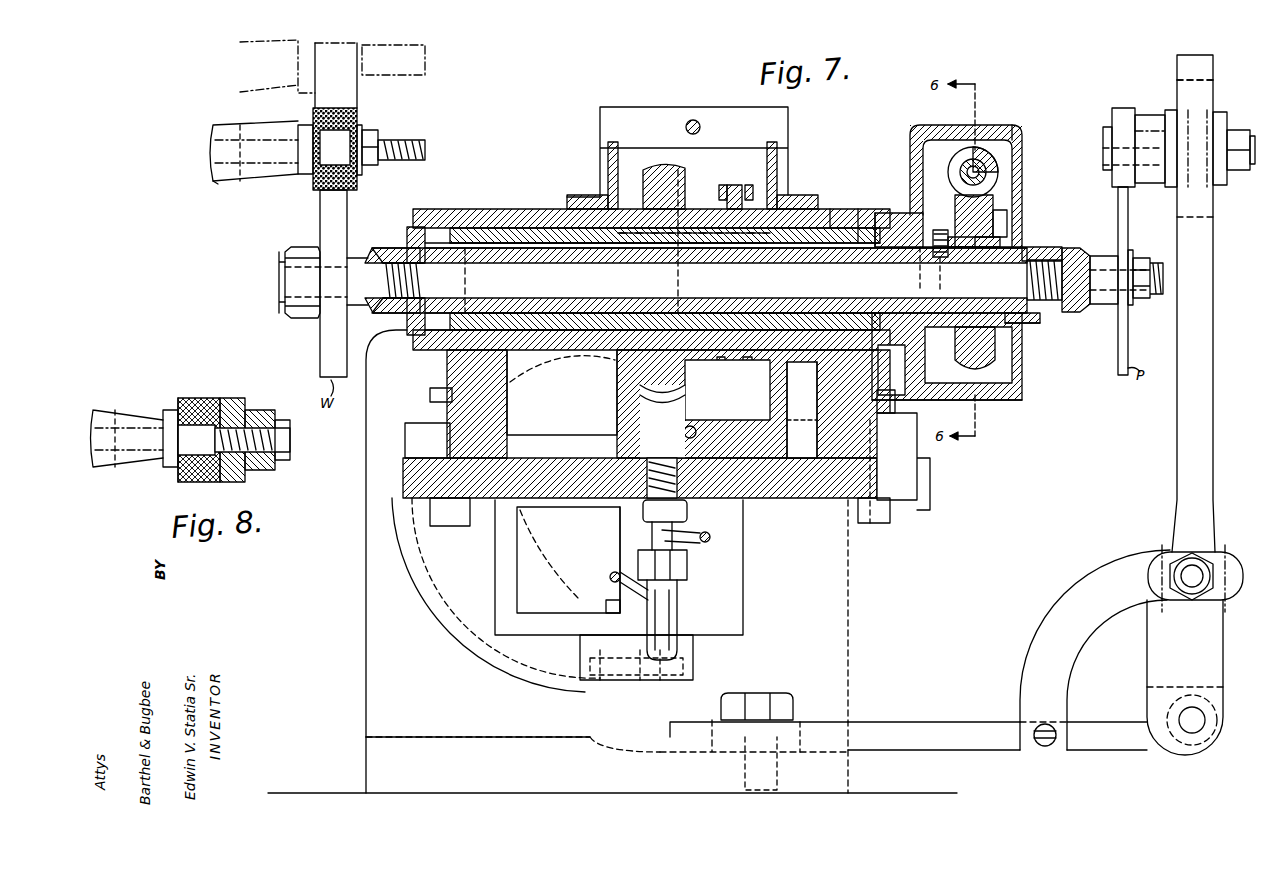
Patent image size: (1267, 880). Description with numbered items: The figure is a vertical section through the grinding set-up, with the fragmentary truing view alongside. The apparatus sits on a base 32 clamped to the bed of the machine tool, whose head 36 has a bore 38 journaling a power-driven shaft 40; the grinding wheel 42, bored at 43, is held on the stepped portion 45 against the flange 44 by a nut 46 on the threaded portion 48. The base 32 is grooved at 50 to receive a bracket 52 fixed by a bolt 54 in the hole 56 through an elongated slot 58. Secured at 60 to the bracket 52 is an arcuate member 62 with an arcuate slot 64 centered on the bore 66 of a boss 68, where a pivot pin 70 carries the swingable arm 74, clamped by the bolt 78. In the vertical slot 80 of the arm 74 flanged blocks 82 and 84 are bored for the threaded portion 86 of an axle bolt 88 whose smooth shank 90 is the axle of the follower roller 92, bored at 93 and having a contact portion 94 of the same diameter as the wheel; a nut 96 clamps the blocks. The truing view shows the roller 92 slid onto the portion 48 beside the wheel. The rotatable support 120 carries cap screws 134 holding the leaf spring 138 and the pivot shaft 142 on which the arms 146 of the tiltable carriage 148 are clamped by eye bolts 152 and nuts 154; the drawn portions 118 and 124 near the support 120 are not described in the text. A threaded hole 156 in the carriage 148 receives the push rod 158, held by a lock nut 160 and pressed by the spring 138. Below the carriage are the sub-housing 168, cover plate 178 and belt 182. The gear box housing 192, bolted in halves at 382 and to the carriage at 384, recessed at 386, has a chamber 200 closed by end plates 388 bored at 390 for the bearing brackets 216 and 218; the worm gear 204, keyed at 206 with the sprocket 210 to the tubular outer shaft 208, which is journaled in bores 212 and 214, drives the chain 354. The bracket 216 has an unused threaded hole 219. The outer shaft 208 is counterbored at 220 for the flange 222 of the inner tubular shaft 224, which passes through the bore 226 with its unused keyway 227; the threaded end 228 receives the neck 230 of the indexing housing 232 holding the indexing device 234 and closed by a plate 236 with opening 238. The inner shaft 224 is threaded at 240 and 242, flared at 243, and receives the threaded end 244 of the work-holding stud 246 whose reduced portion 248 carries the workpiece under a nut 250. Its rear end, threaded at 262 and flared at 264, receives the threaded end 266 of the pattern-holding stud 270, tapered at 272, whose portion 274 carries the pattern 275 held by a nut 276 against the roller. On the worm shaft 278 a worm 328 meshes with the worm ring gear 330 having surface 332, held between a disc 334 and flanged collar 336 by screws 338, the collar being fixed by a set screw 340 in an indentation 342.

In FIG. 7, the base 32 is at (366, 760).
In FIG. 7, the head 36 is at (234, 178).
In FIG. 8, the head 36 is at (123, 410).
In FIG. 7, the bore 38 is at (240, 124).
In FIG. 8, the bore 38 is at (115, 468).
In FIG. 7, the rotary power-driven shaft 40 is at (214, 150).
In FIG. 8, the rotary power-driven shaft 40 is at (110, 395).
In FIG. 7, the grinding wheel 42 is at (357, 112).
In FIG. 8, the grinding wheel 42 is at (200, 398).
In FIG. 7, the grinding wheel bore 43 is at (310, 112).
In FIG. 8, the grinding wheel bore 43 is at (180, 393).
In FIG. 7, the flange 44 is at (304, 176).
In FIG. 7, the stepped portion 45 is at (320, 150).
In FIG. 8, the stepped portion 45 is at (195, 440).
In FIG. 7, the nut 46 is at (378, 134).
In FIG. 8, the nut 46 is at (284, 460).
In FIG. 7, the reduced diameter threaded portion 48 is at (408, 141).
In FIG. 8, the reduced diameter threaded portion 48 is at (290, 440).
In FIG. 7, the groove 50 is at (645, 737).
In FIG. 7, the bracket 52 is at (943, 724).
In FIG. 7, the bolt 54 is at (760, 693).
In FIG. 7, the hole 56 is at (742, 765).
In FIG. 7, the elongated slot 58 is at (802, 720).
In FIG. 7, the securing means 60 is at (1046, 748).
In FIG. 7, the arcuate member 62 is at (1058, 612).
In FIG. 7, the arcuate slot 64 is at (1160, 566).
In FIG. 7, the bore 66 is at (1192, 734).
In FIG. 7, the boss 68 is at (1163, 750).
In FIG. 7, the pivot pin 70 is at (1180, 718).
In FIG. 7, the swingable arm 74 is at (1177, 455).
In FIG. 7, the clamping bolt 78 is at (1192, 600).
In FIG. 7, the vertical slot 80 is at (1220, 82).
In FIG. 7, the flanged block 82 is at (1224, 118).
In FIG. 7, the flanged block 84 is at (1170, 110).
In FIG. 7, the reduced diameter threaded portion 86 is at (1250, 166).
In FIG. 7, the headed axle bolt 88 is at (1106, 138).
In FIG. 7, the smooth shank 90 is at (1150, 110).
In FIG. 7, the pattern follower roller 92 is at (1145, 148).
In FIG. 8, the pattern follower roller 92 is at (252, 410).
In FIG. 7, the roller bore 93 is at (1112, 166).
In FIG. 8, the roller bore 93 is at (257, 432).
In FIG. 7, the cylindrical contact portion 94 is at (1118, 112).
In FIG. 8, the cylindrical contact portion 94 is at (230, 398).
In FIG. 7, the nut 96 is at (1236, 134).
In FIG. 7, the dial graduation arc 118 is at (602, 530).
In FIG. 7, the rotatable support 120 is at (735, 595).
In FIG. 7, the dial plate 124 is at (535, 568).
In FIG. 7, the cap screws 134 is at (694, 668).
In FIG. 7, the leaf spring 138 is at (693, 650).
In FIG. 7, the pivot shaft 142 is at (926, 490).
In FIG. 7, the bifurcated arms 146 is at (915, 445).
In FIG. 7, the tiltable carriage 148 is at (905, 500).
In FIG. 7, the eye bolts 152 is at (450, 526).
In FIG. 7, the clamping nuts 154 is at (430, 402).
In FIG. 7, the threaded vertical hole 156 is at (668, 478).
In FIG. 7, the push rod 158 is at (682, 563).
In FIG. 7, the lock nut 160 is at (700, 520).
In FIG. 7, the sub-housing 168 is at (517, 590).
In FIG. 7, the cover plate 178 is at (607, 614).
In FIG. 7, the quarter-turn belt 182 is at (710, 540).
In FIG. 7, the gear box housing 192 is at (786, 122).
In FIG. 7, the chamber 200 is at (630, 165).
In FIG. 7, the worm gear 204 is at (680, 170).
In FIG. 7, the key 206 is at (688, 230).
In FIG. 7, the tubular outer shaft 208 is at (540, 250).
In FIG. 7, the sprocket 210 is at (733, 184).
In FIG. 7, the bore 212 is at (841, 210).
In FIG. 7, the bore 214 is at (540, 228).
In FIG. 7, the bearing bracket 216 is at (863, 208).
In FIG. 7, the bearing bracket 218 is at (472, 208).
In FIG. 7, the horizontal threaded hole 219 is at (830, 390).
In FIG. 7, the counterbore 220 is at (416, 210).
In FIG. 7, the annular flange 222 is at (409, 230).
In FIG. 7, the inner tubular shaft 224 is at (492, 244).
In FIG. 7, the bore 226 is at (588, 318).
In FIG. 7, the keyway 227 is at (497, 226).
In FIG. 7, the threaded end 228 is at (884, 226).
In FIG. 7, the threaded neck 230 is at (892, 213).
In FIG. 7, the indexing housing 232 is at (910, 150).
In FIG. 7, the indexing device 234 is at (985, 148).
In FIG. 7, the closure plate 236 is at (1020, 128).
In FIG. 7, the opening 238 is at (1006, 217).
In FIG. 7, the external thread 240 is at (390, 250).
In FIG. 7, the threaded bore 242 is at (404, 336).
In FIG. 7, the flared portion 243 is at (396, 340).
In FIG. 7, the threaded inner end 244 is at (410, 280).
In FIG. 7, the work-holding stud 246 is at (357, 262).
In FIG. 7, the reduced diameter portion 248 is at (285, 292).
In FIG. 7, the nut 250 is at (290, 258).
In FIG. 7, the internal thread 262 is at (1035, 314).
In FIG. 7, the flared portion 264 is at (1062, 323).
In FIG. 7, the threaded inner end 266 is at (1030, 282).
In FIG. 7, the pattern-holding stud 270 is at (1085, 265).
In FIG. 7, the taper 272 is at (1094, 305).
In FIG. 7, the reduced diameter portion 274 is at (1150, 258).
In FIG. 7, the pattern 275 is at (1122, 376).
In FIG. 7, the nut 276 is at (1131, 306).
In FIG. 7, the worm shaft 278 is at (960, 176).
In FIG. 7, the worm 328 is at (952, 162).
In FIG. 7, the worm ring gear 330 is at (965, 410).
In FIG. 7, the internal cylindrical surface 332 is at (1000, 178).
In FIG. 7, the disc 334 is at (1001, 242).
In FIG. 7, the flanged collar 336 is at (955, 340).
In FIG. 7, the screws 338 is at (998, 200).
In FIG. 7, the set screw 340 is at (940, 230).
In FIG. 7, the indentation 342 is at (933, 262).
In FIG. 7, the sprocket chain 354 is at (748, 185).
In FIG. 7, the bolts 382 is at (693, 120).
In FIG. 7, the bolts 384 is at (802, 428).
In FIG. 7, the recess 386 is at (672, 393).
In FIG. 7, the flanged end plates 388 is at (606, 163).
In FIG. 7, the bore 390 is at (584, 200).